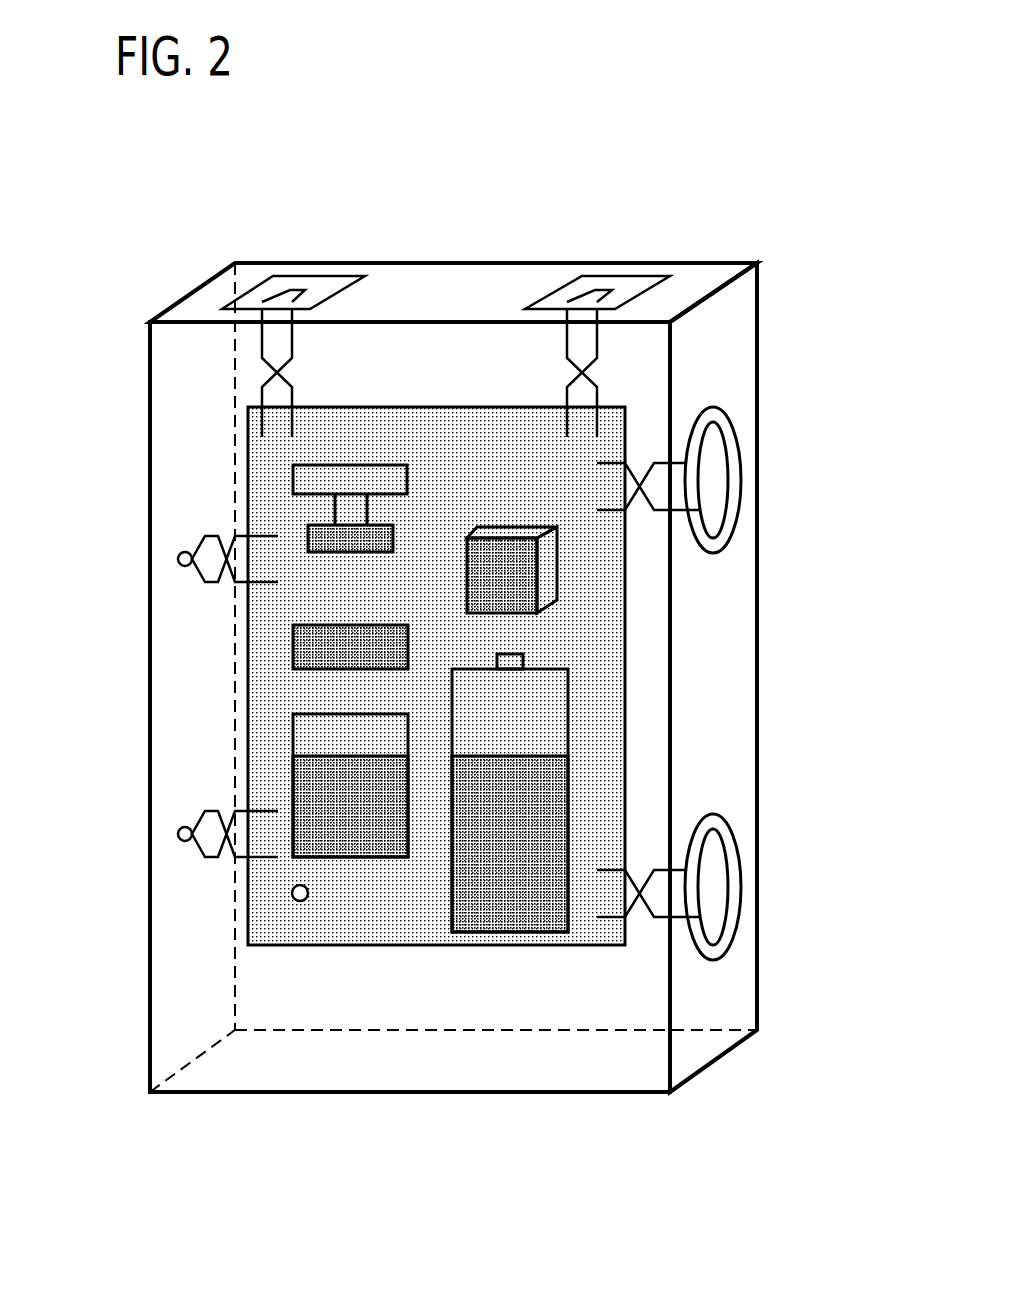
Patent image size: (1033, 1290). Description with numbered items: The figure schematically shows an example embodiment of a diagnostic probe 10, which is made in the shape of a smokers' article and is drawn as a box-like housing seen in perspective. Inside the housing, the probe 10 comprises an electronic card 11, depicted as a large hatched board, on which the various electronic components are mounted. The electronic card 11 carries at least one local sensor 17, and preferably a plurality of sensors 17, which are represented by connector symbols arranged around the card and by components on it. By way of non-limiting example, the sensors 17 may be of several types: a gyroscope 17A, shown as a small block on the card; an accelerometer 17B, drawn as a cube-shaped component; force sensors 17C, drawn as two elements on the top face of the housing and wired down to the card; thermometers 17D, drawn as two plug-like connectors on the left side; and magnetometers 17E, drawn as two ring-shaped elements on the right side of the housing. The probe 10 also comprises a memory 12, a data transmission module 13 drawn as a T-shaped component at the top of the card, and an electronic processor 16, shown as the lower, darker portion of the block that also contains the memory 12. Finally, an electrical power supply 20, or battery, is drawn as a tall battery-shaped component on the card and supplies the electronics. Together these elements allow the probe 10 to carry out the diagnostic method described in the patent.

The probe 10 is at (725, 158).
The electronic card 11 is at (481, 466).
The memory 12 is at (249, 932).
The data transmission module 13 is at (372, 462).
The processor 16 is at (363, 863).
The local sensor 17 is at (447, 571).
The gyroscope 17A is at (292, 652).
The accelerometer 17B is at (563, 585).
The force sensor 17C is at (303, 279).
The thermometer 17D is at (190, 577).
The magnetometer 17E is at (743, 423).
The electrical power supply 20 is at (518, 932).